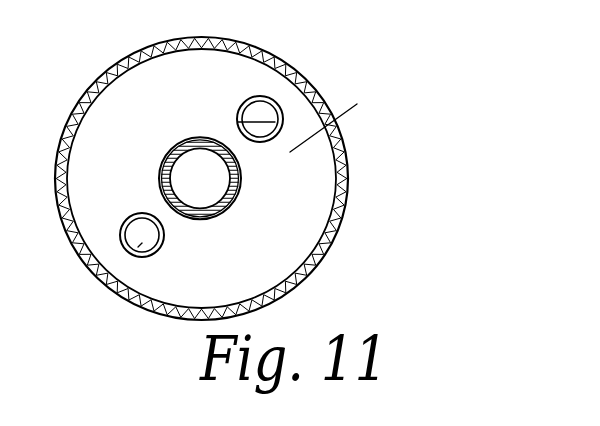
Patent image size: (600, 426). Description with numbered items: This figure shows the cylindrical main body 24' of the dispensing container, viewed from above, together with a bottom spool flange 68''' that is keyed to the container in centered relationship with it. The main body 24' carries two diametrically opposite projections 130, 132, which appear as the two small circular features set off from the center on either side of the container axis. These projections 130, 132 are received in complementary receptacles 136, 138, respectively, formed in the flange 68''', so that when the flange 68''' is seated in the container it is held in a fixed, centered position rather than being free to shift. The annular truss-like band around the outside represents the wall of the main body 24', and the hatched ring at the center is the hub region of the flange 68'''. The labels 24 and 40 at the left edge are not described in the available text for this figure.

The main body 24' is at (201, 166).
The projection 130 is at (272, 115).
The receptacle 136 is at (237, 120).
The flange 68''' is at (353, 109).
The receptacle 138 is at (150, 223).
The projection 132 is at (142, 243).
The truss 24 is at (15, 177).
The member 40 is at (15, 225).